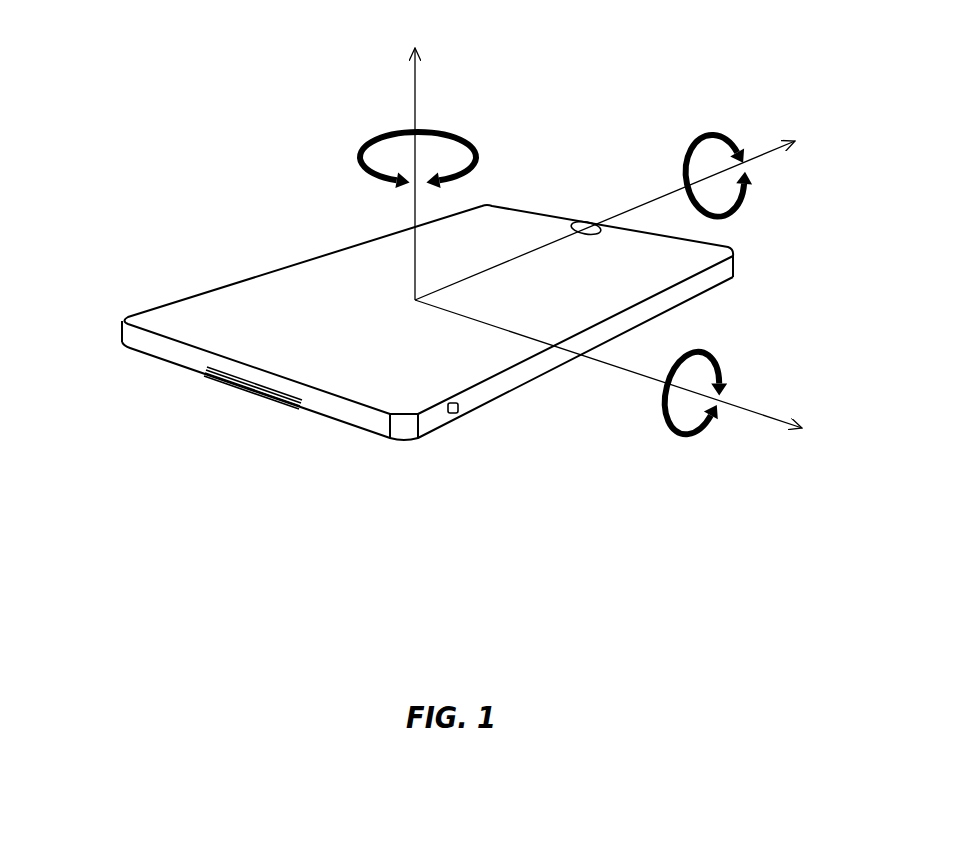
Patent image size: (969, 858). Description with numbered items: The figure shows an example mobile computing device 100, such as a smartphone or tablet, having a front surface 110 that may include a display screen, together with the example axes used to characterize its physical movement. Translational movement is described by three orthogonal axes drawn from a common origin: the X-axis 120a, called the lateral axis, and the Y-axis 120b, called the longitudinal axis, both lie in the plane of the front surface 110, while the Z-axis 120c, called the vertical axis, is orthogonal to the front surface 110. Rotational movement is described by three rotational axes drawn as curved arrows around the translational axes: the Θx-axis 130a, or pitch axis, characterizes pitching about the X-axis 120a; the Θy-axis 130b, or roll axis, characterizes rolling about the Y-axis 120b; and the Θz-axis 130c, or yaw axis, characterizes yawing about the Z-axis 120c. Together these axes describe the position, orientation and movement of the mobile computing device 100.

The mobile computing device 100 is at (396, 306).
The front surface 110 is at (330, 305).
The X-axis 120a is at (774, 424).
The Y-axis 120b is at (772, 160).
The Z-axis 120c is at (420, 77).
The Θx-axis 130a is at (658, 415).
The Θy-axis 130b is at (740, 224).
The Θz-axis 130c is at (480, 148).